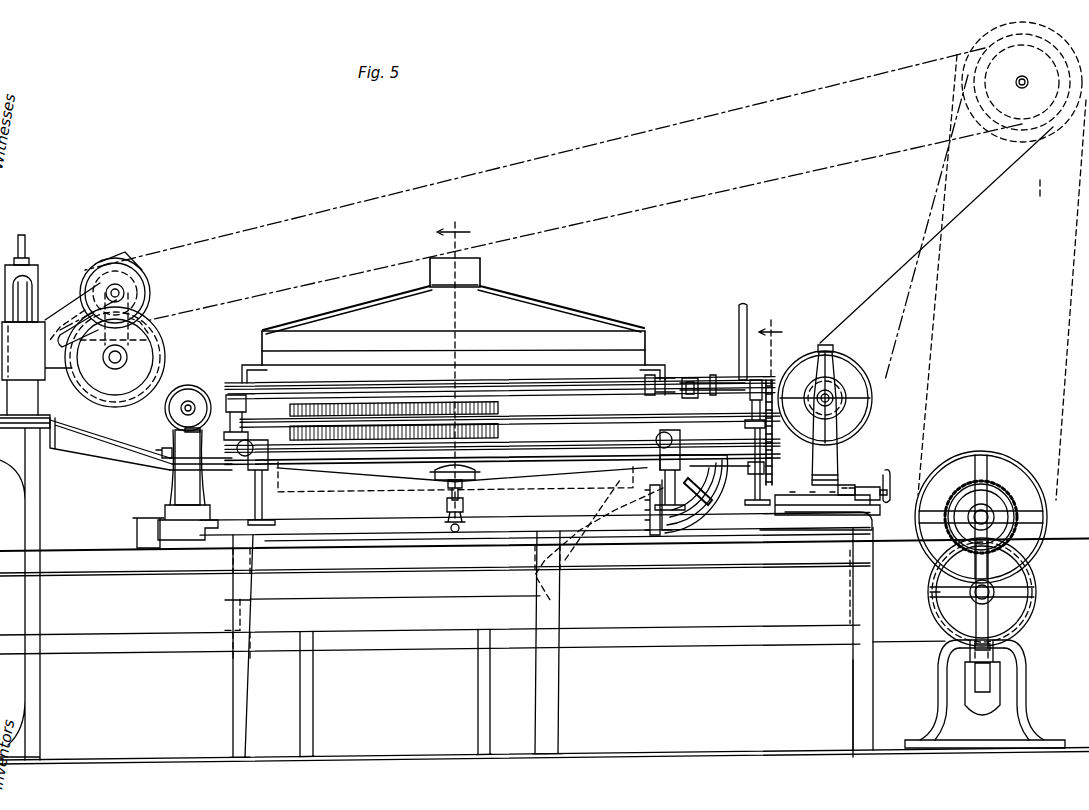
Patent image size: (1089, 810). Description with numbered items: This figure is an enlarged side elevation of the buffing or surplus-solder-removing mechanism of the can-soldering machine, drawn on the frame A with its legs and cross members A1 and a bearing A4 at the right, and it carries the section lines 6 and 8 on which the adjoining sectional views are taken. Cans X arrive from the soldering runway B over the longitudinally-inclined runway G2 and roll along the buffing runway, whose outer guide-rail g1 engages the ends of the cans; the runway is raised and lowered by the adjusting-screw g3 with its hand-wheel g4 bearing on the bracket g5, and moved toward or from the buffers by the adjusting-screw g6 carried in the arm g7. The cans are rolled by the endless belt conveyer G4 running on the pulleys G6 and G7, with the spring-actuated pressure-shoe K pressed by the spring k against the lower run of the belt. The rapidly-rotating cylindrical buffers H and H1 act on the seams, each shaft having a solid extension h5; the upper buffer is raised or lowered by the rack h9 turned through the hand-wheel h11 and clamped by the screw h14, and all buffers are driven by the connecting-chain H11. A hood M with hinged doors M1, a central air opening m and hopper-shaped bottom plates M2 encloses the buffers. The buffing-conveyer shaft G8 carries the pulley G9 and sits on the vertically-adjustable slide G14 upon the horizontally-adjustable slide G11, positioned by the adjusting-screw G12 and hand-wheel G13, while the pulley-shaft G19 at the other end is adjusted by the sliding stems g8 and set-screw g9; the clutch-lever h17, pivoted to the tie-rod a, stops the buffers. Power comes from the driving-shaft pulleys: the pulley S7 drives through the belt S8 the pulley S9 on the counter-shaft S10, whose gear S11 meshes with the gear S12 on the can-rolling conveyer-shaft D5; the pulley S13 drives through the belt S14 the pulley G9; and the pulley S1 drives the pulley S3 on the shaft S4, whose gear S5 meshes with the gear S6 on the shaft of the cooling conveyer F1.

The frame A is at (40, 523).
The frame cross bar A1 is at (235, 580).
The frame bearing A4 is at (1020, 592).
The can X is at (148, 533).
The hood M is at (453, 334).
The hinged sides or doors M1 is at (500, 379).
The hopper-shaped bottom plates M2 is at (462, 483).
The central opening m is at (447, 287).
The section line 6 6 is at (453, 363).
The section line 8 8 is at (770, 344).
The longitudinally-inclined runway G2 is at (112, 452).
The endless flexible conveyer G4 is at (565, 386).
The pulley G6 is at (192, 392).
The pulley G7 is at (843, 410).
The buffing-conveyer shaft G8 is at (843, 385).
The pulley G9 is at (845, 400).
The adjustable slide G11 is at (812, 475).
The adjusting-screw G12 is at (840, 492).
The hand-wheel G13 is at (895, 480).
The vertically-adjustable slide G14 is at (840, 436).
The pulley-shaft G19 is at (176, 408).
The outer guide or rail g1 is at (600, 476).
The adjusting-screw g3 is at (470, 493).
The hand-wheel g4 is at (440, 480).
The bracket g5 is at (452, 505).
The adjusting-screw g6 is at (253, 455).
The arm g7 is at (650, 485).
The sliding stem g8 is at (185, 427).
The set-screw g9 is at (165, 452).
The rotary cylindrical buffer H is at (700, 520).
The rotary cylindrical buffer H1 is at (495, 410).
The connecting-chain H11 is at (774, 460).
The solid extension h5 is at (740, 470).
The rack h9 is at (775, 375).
The hand-wheel h11 is at (713, 372).
The screw h14 is at (698, 398).
The clutch-lever h17 is at (740, 308).
The pressure-shoe K is at (580, 430).
The spring k is at (248, 417).
The tie-rod a is at (655, 375).
The can-runway B is at (1025, 80).
The can-rolling conveyer-shaft D5 is at (128, 357).
The can-cooling conveyer F1 is at (1015, 600).
The pulley S1 is at (1052, 132).
The pulley S3 is at (1022, 460).
The shaft S4 is at (1000, 505).
The gear S5 is at (1010, 528).
The gear S6 is at (1030, 565).
The pulley S7 is at (616, 171).
The belt S8 is at (598, 148).
The pulley S9 is at (150, 280).
The counter-shaft S10 is at (118, 290).
The gear S11 is at (110, 262).
The gear S12 is at (170, 341).
The pulley S13 is at (1020, 150).
The belt S14 is at (962, 210).